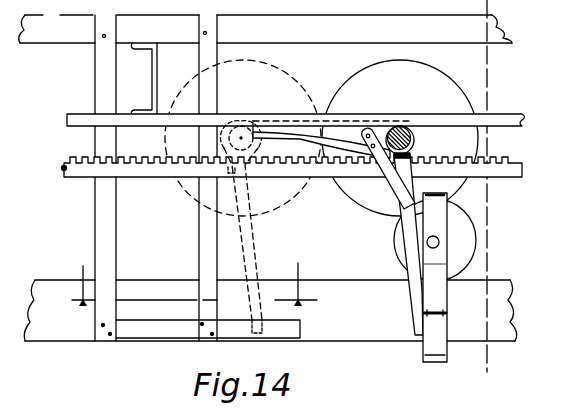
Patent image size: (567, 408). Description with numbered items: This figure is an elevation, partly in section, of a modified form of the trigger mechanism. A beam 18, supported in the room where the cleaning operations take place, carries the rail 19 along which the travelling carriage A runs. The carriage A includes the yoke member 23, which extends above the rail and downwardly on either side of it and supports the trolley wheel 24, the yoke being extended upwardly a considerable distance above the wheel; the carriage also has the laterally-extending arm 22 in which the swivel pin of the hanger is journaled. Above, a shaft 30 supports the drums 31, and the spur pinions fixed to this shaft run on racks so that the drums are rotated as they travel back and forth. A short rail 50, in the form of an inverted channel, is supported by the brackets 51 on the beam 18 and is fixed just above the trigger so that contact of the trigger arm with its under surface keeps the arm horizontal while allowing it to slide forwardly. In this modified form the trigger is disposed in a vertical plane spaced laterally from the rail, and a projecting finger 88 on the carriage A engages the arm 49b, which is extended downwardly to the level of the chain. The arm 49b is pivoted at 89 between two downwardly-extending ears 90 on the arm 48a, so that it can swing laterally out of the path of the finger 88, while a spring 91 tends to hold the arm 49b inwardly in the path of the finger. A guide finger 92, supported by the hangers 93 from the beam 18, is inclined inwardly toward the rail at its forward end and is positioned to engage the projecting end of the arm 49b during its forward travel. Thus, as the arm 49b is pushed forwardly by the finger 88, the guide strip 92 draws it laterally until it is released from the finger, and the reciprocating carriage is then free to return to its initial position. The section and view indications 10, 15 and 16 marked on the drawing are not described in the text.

The section line 10- 10 is at (517, 5).
The section line 15- 15 is at (517, 363).
The section line 16- 16 is at (191, 278).
The beam 18 is at (265, 29).
The rail 19 is at (270, 310).
The laterally-extending arm 22 is at (438, 362).
The yoke member 23 is at (440, 265).
The trolley wheel 24 is at (467, 244).
The shaft 30 is at (407, 127).
The drum 31 is at (321, 138).
The arm 48a is at (345, 135).
The arm 49b is at (413, 289).
The short rail 50 is at (82, 100).
The bracket 51 is at (158, 86).
The projecting finger 88 is at (447, 314).
The pivot 89 is at (416, 151).
The downwardly-extending ears 90 is at (418, 161).
The spring 91 is at (390, 186).
The guide finger 92 is at (208, 330).
The hanger 93 is at (201, 63).
The travelling carriage A is at (440, 224).